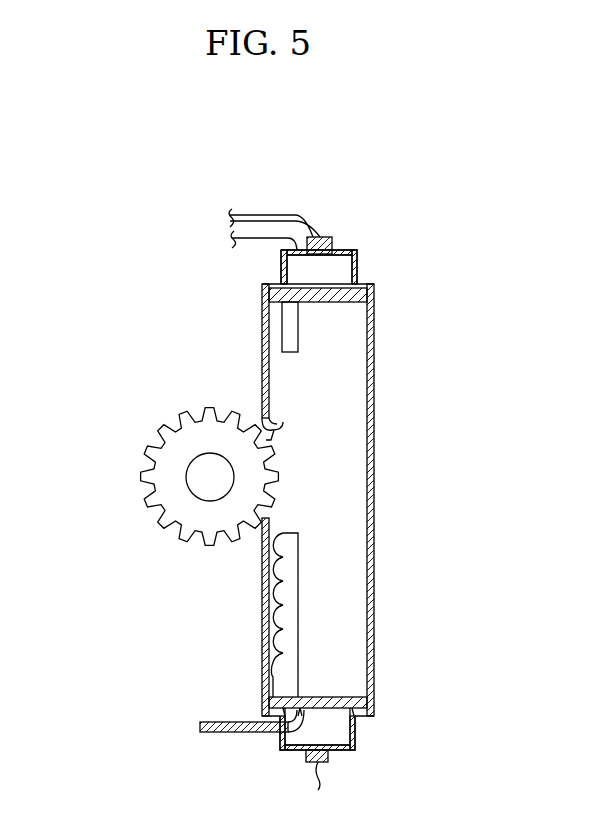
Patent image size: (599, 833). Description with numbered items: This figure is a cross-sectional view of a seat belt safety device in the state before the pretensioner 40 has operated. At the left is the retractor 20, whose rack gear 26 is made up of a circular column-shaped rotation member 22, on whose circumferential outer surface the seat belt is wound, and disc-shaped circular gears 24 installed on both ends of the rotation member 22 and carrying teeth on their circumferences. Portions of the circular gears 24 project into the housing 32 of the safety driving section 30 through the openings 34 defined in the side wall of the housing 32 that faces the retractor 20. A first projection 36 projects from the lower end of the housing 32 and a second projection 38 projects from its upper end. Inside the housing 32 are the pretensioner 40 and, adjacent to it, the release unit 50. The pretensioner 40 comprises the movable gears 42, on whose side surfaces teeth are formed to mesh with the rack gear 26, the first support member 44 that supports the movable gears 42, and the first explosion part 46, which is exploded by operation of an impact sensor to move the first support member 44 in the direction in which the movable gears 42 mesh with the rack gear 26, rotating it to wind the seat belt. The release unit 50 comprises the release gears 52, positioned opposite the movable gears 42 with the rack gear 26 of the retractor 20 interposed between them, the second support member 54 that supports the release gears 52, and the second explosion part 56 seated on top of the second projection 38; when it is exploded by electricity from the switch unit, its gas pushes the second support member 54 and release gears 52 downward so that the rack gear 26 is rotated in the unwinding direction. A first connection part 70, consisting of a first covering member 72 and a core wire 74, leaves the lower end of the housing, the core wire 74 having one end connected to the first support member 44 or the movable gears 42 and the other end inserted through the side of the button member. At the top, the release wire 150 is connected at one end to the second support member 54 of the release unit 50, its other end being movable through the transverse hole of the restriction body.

The retractor 20 is at (165, 449).
The rotation member 22 is at (205, 480).
The circular gears 24 is at (148, 450).
The rack gear 26 is at (165, 477).
The safety driving section 30 is at (325, 490).
The housing 32 is at (373, 579).
The openings 34 is at (283, 425).
The first projection 36 is at (355, 735).
The second projection 38 is at (360, 263).
The pretensioner 40 is at (332, 665).
The movable gears 42 is at (288, 608).
The first support member 44 is at (372, 703).
The first explosion part 46 is at (330, 761).
The release unit 50 is at (326, 318).
The release gears 52 is at (288, 332).
The second support member 54 is at (366, 297).
The second explosion part 56 is at (325, 237).
The first connection part 70 is at (252, 764).
The first covering member 72 is at (252, 734).
The core wire 74 is at (297, 743).
The release wire 150 is at (262, 242).